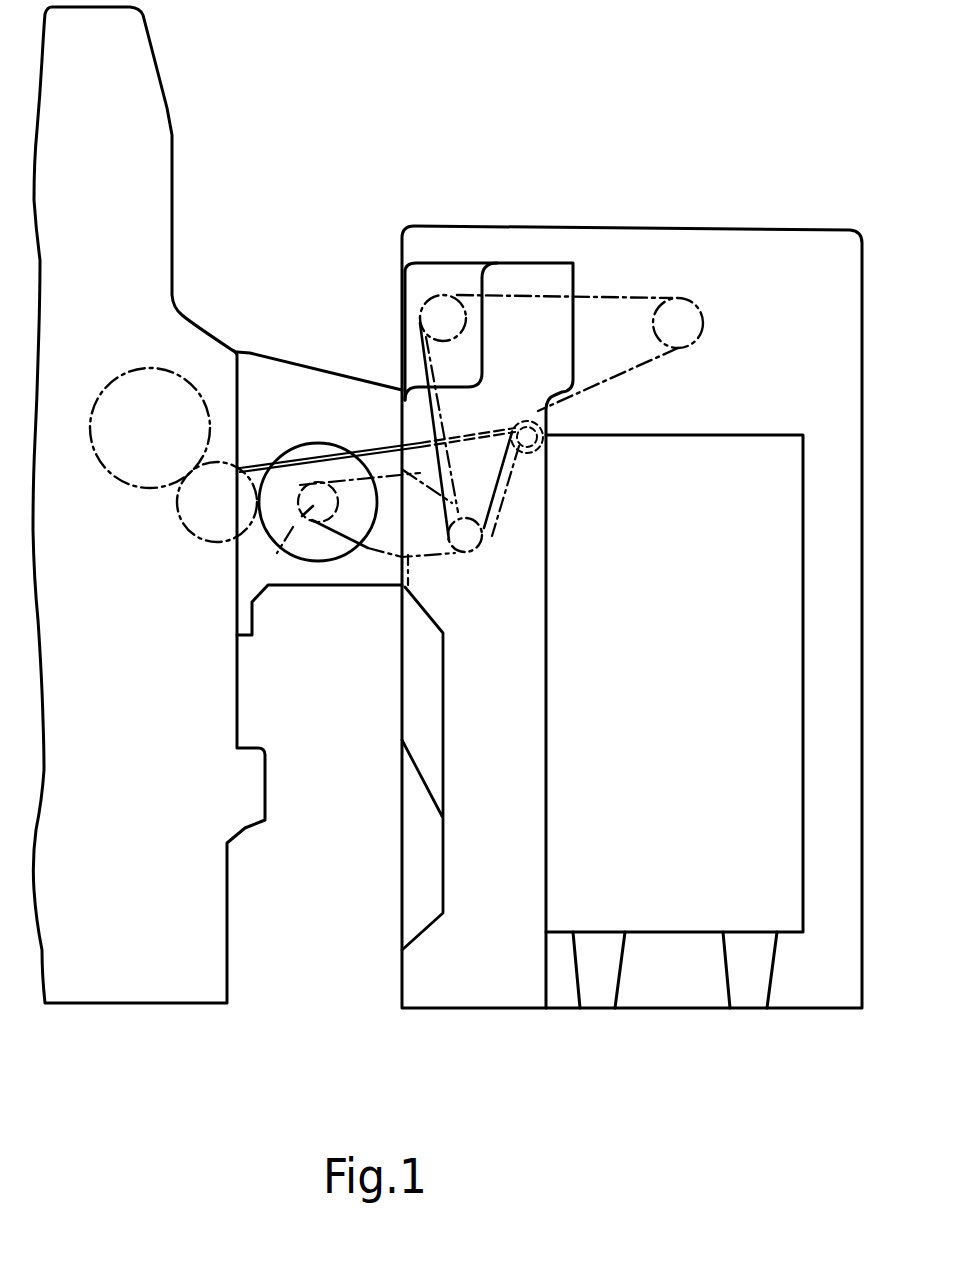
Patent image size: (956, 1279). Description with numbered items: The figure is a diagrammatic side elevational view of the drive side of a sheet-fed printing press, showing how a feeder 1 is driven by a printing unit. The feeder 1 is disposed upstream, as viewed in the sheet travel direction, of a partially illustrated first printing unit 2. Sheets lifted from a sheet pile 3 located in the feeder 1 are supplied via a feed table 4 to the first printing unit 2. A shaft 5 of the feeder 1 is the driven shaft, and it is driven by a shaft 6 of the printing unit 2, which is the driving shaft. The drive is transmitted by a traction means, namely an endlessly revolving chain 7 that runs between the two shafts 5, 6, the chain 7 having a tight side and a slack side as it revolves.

The feeder 1 is at (628, 229).
The first printing unit 2 is at (170, 108).
The sheet pile 3 is at (688, 638).
The feed table 4 is at (239, 468).
The shaft 5 is at (484, 560).
The shaft 6 is at (283, 550).
The chain 7 is at (404, 592).